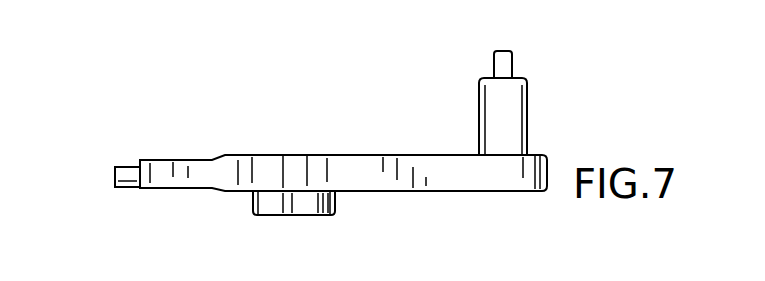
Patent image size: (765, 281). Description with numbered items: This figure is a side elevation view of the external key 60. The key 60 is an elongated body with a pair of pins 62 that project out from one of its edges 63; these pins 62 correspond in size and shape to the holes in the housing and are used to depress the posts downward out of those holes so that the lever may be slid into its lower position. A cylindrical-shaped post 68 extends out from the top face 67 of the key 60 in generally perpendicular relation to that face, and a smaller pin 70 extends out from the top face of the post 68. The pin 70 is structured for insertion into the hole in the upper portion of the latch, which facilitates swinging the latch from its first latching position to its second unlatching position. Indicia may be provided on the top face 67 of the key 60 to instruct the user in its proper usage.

The external key 60 is at (268, 120).
The pins 62 is at (115, 172).
The edge 63 is at (141, 160).
The top face 67 is at (405, 155).
The cylindrical-shaped post 68 is at (527, 110).
The pin 70 is at (514, 62).